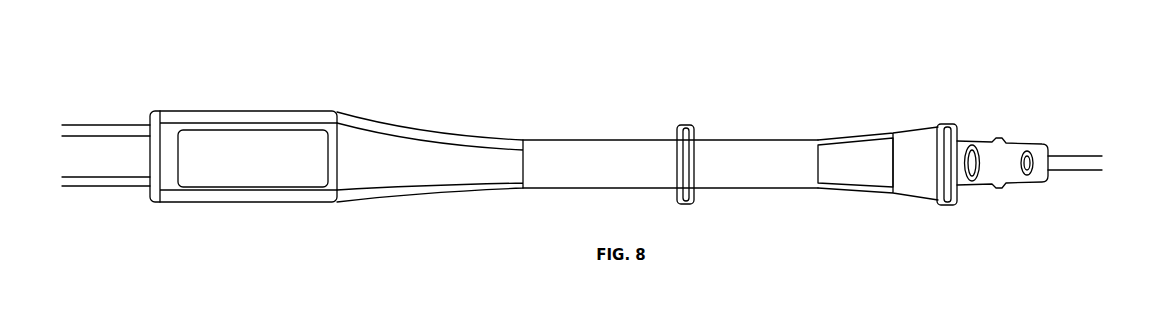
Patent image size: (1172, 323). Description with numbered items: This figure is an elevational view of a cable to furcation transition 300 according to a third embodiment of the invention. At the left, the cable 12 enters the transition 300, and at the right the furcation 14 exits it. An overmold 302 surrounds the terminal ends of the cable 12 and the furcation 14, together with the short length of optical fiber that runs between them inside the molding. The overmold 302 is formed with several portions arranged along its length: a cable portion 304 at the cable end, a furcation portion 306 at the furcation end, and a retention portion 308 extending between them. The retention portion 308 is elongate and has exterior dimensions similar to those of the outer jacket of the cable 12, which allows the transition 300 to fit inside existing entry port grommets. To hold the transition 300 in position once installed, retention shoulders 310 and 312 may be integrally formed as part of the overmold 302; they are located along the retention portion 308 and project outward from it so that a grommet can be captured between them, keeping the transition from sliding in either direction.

The cable 12 is at (92, 127).
The furcation 14 is at (1087, 153).
The transition 300 is at (357, 246).
The overmold 302 is at (395, 153).
The cable portion 304 is at (295, 197).
The furcation portion 306 is at (1012, 183).
The retention portion 308 is at (582, 155).
The retention shoulder 310 is at (690, 197).
The retention shoulder 312 is at (950, 204).